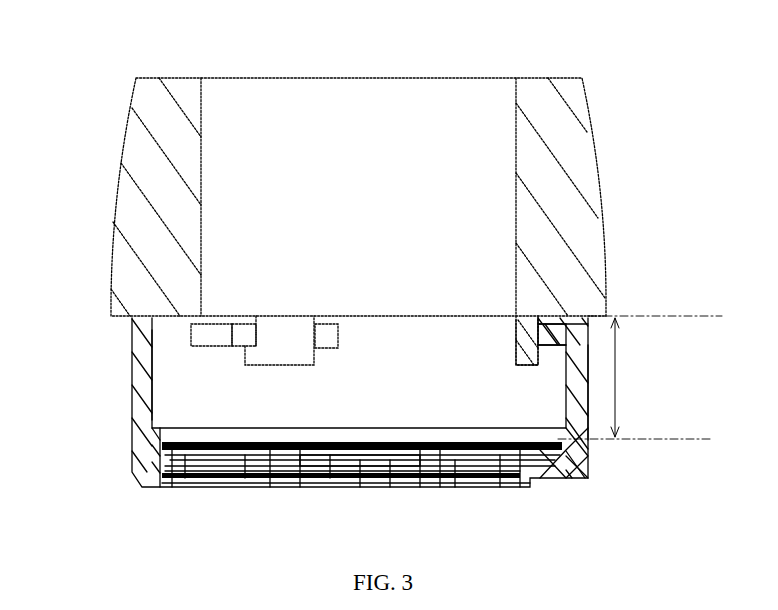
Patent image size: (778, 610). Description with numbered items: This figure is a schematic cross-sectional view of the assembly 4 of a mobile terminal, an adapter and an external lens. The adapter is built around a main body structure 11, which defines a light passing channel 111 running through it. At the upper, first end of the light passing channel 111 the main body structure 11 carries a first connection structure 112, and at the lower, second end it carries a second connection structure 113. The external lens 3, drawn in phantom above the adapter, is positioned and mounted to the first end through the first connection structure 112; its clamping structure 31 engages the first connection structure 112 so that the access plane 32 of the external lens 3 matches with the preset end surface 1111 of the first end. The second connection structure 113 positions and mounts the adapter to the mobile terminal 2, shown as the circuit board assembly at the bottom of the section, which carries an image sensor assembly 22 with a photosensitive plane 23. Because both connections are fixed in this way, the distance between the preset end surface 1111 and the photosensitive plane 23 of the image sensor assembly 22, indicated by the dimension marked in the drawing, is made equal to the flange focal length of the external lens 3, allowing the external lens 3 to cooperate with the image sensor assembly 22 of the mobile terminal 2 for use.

The electronic device 4 is at (84, 73).
The external lens 3 is at (197, 108).
The clamping structure 31 is at (520, 342).
The main body structure 11 is at (152, 386).
The light passing channel 111 is at (186, 363).
The first connection structure 112 is at (545, 332).
The second connection structure 113 is at (160, 443).
The preset end surface 1111 is at (698, 317).
The access plane 32 is at (655, 392).
The mobile terminal 2 is at (250, 460).
The image sensor assembly 22 is at (378, 447).
The photosensitive plane 23 is at (680, 441).